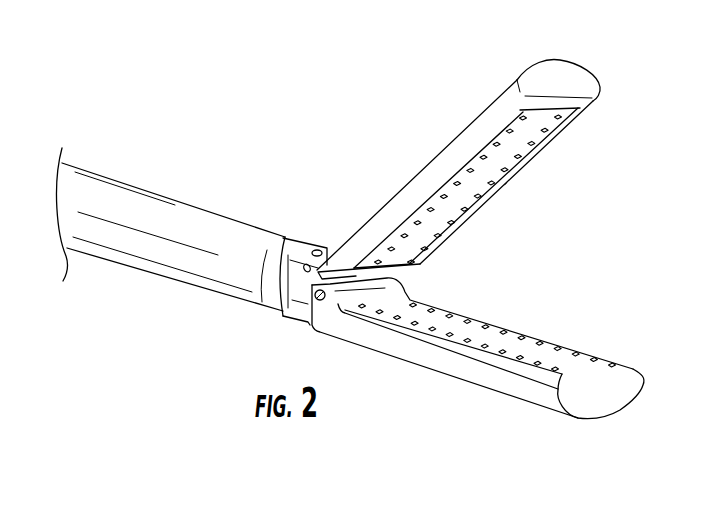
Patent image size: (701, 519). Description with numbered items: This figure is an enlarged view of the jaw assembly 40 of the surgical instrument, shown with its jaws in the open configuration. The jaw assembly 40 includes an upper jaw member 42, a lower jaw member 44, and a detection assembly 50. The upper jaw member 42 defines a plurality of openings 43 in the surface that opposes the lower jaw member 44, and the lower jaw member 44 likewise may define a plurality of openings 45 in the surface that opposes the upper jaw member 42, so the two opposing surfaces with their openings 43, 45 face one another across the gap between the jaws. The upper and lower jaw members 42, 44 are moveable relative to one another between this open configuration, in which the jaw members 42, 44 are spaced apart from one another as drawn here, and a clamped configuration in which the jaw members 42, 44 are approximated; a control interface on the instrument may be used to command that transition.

The jaw assembly 40 is at (351, 156).
The upper jaw member 42 is at (474, 151).
The openings 43 is at (546, 131).
The lower jaw member 44 is at (482, 378).
The openings 45 is at (571, 352).
The detection assembly 50 is at (505, 182).